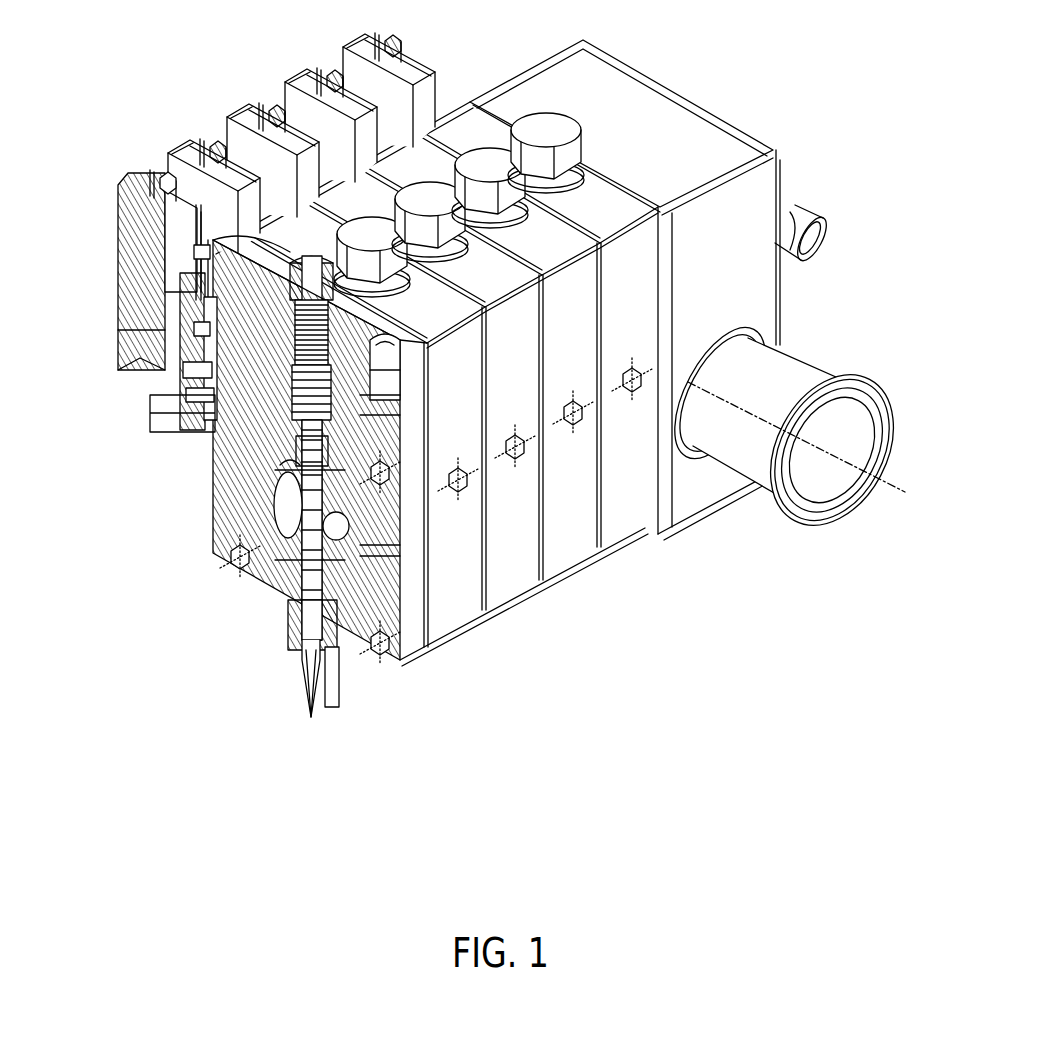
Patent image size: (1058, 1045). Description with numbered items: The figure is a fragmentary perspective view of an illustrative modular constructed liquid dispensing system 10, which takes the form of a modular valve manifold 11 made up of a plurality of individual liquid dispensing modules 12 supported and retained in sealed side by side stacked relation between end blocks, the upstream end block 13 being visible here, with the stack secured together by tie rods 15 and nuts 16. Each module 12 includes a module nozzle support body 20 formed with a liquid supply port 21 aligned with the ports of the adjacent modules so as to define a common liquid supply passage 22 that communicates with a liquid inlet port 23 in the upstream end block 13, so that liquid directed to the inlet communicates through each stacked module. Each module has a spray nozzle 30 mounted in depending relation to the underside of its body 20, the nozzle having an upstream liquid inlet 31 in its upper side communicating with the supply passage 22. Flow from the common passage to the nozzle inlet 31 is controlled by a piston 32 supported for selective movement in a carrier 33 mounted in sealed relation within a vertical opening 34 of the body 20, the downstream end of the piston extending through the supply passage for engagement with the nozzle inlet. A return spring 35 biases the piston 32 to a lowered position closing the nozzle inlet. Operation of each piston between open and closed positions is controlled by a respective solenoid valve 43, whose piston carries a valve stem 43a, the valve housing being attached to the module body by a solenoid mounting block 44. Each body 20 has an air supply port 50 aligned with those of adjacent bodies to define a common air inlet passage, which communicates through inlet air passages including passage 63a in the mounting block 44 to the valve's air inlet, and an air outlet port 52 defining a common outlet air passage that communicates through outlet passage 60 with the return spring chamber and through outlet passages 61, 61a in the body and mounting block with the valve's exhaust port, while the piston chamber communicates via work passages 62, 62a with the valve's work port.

The liquid dispensing system 10 is at (500, 381).
The modular valve manifold 11 is at (594, 378).
The liquid dispensing module 12 is at (403, 667).
The end block 13 is at (782, 172).
The tie rod 15 is at (232, 570).
The nut 16 is at (821, 253).
The module nozzle support body 20 is at (300, 505).
The liquid supply port 21 is at (283, 542).
The common liquid supply passage 22 is at (287, 528).
The liquid inlet port 23 is at (894, 407).
The spray nozzle 30 is at (300, 685).
The spray nozzle inlet 31 is at (260, 592).
The piston 32 is at (397, 550).
The carrier 33 is at (322, 453).
The vertical opening 34 is at (310, 458).
The return spring 35 is at (322, 365).
The solenoid valve 43 is at (128, 178).
The valve stem 43a is at (150, 348).
The solenoid mounting block 44 is at (188, 400).
The air supply port 50 is at (290, 470).
The air outlet port 52 is at (400, 405).
The outlet passage 60 is at (350, 385).
The outlet passage 61 is at (263, 330).
The outlet passage 61a is at (197, 343).
The work passage 62 is at (277, 410).
The work passage 62a is at (185, 370).
The inlet air passage 63a is at (192, 397).